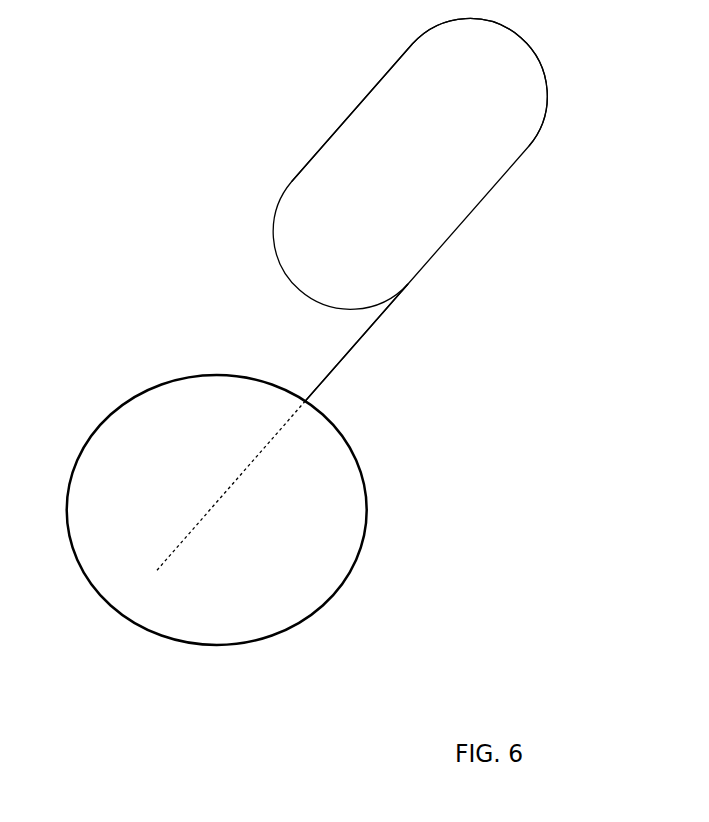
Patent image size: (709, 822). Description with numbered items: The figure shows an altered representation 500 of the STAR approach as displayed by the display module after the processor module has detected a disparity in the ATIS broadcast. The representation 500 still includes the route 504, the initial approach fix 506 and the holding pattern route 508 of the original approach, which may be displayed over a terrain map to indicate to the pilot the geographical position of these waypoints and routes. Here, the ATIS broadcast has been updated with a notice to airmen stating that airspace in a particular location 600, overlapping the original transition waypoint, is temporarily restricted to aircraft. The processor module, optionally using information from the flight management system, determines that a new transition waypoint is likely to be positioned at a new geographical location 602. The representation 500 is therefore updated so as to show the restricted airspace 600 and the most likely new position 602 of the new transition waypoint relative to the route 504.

The representation 500 is at (500, 306).
The route 504 is at (387, 308).
The initial approach fix 506 is at (532, 145).
The holding pattern route 508 is at (343, 120).
The restricted airspace 600 is at (367, 530).
The new geographical location 602 is at (322, 385).